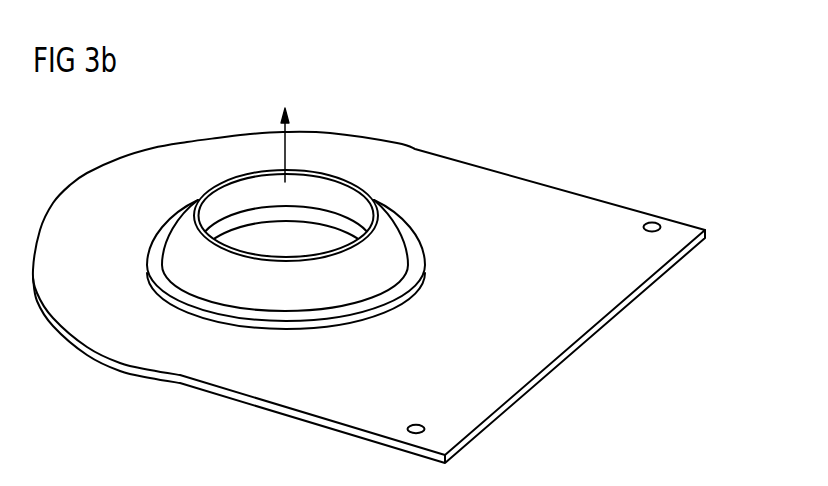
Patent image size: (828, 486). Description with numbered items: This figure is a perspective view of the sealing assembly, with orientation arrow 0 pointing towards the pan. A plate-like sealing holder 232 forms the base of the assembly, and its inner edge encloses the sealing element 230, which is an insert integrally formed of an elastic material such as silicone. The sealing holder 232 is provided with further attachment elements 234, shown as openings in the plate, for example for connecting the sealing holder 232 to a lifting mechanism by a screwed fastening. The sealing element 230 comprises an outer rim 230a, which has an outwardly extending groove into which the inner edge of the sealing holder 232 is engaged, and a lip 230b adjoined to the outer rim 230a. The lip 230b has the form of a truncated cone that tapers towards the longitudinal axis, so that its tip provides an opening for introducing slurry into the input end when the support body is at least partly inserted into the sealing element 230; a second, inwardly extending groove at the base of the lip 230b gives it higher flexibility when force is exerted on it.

The orientation arrow 0 is at (285, 146).
The sealing element 230 is at (384, 220).
The outer rim 230a is at (157, 245).
The lip 230b is at (186, 219).
The sealing holder 232 is at (578, 203).
The attachment elements 234 is at (653, 222).